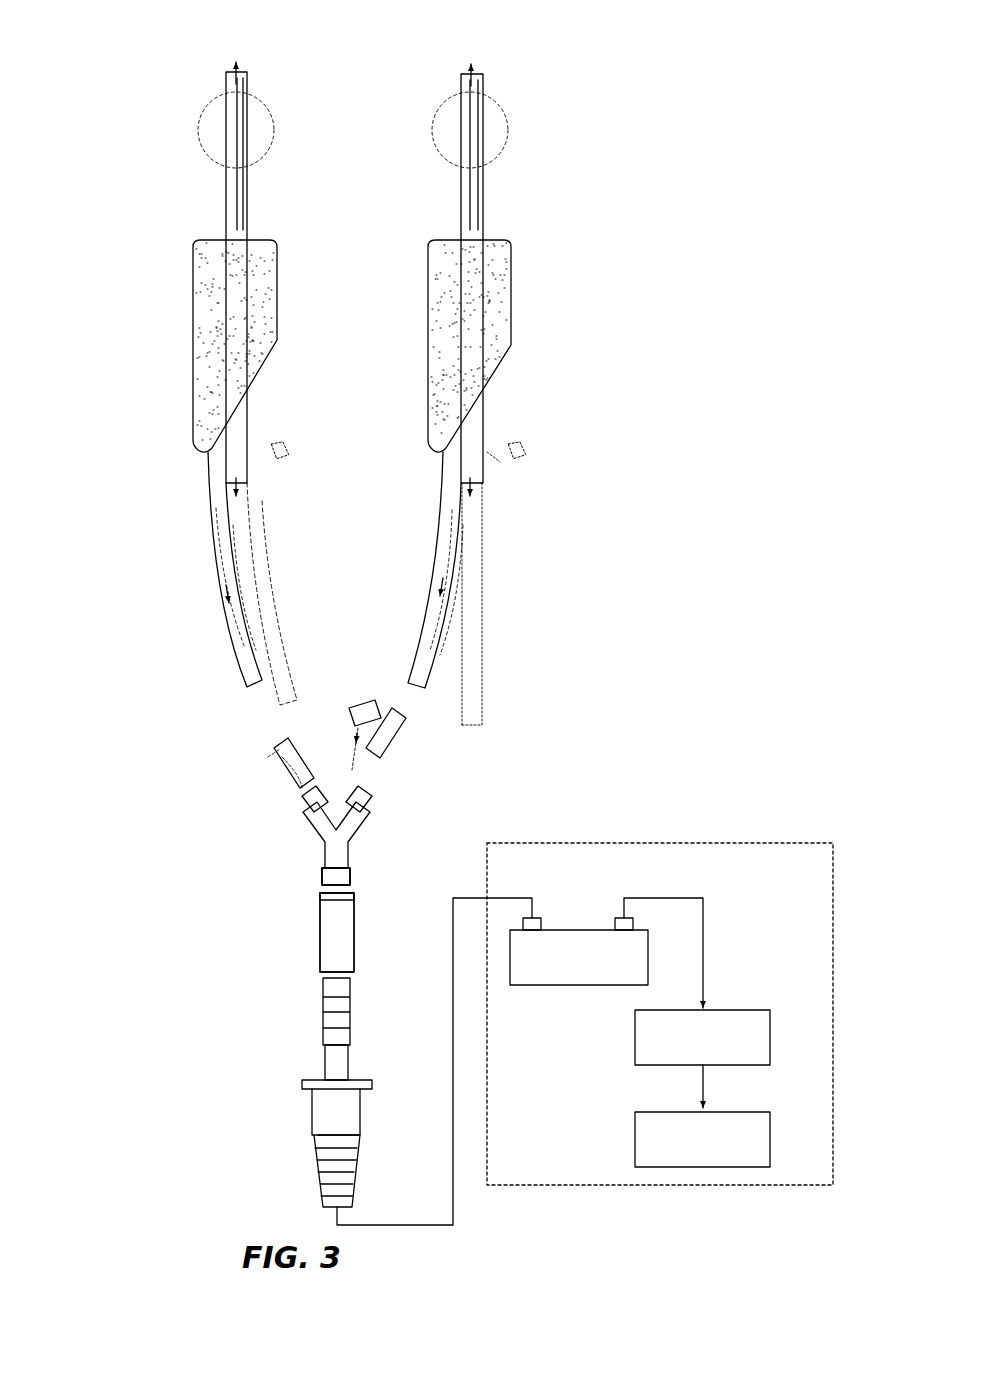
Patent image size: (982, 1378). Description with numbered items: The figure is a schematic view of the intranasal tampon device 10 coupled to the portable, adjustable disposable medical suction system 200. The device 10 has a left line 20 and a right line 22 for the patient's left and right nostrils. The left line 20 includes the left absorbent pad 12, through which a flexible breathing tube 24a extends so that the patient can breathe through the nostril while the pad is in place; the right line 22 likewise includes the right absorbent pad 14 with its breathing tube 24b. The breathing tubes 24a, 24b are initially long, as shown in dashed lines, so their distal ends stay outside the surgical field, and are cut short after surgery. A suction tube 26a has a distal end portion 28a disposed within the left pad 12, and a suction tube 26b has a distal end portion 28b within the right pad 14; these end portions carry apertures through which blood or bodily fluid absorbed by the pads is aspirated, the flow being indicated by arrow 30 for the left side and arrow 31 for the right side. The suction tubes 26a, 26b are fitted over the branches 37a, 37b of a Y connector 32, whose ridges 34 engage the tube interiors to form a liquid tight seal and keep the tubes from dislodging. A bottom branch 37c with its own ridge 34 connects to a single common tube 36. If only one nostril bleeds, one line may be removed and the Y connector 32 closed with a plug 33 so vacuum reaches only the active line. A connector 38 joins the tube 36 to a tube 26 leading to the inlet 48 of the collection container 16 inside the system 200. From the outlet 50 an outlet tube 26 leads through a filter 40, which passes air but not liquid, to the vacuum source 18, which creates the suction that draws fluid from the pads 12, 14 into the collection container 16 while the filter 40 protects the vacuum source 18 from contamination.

The intranasal tampon device 10 is at (130, 1229).
The left absorbent pad 12 is at (182, 452).
The right absorbent pad 14 is at (538, 452).
The collection container 16 is at (564, 985).
The vacuum source 18 is at (771, 1135).
The left line 20 is at (280, 58).
The right line 22 is at (516, 60).
The breathing tube 24a is at (228, 190).
The breathing tube 24b is at (462, 192).
The tube 26 is at (453, 1068).
The suction tube 26a is at (214, 596).
The suction tube 26b is at (446, 645).
The distal end portion 28a is at (220, 244).
The distal end portion 28b is at (455, 244).
The arrow 30 is at (219, 565).
The arrow 31 is at (461, 566).
The Y connector 32 is at (322, 864).
The plug 33 is at (365, 697).
The ridges 34 is at (300, 816).
The single tube 36 is at (318, 920).
The branch 37a is at (310, 842).
The branch 37b is at (362, 826).
The bottom branch 37c is at (320, 874).
The connector 38 is at (282, 1080).
The filter 40 is at (771, 1030).
The inlet 48 is at (545, 918).
The outlet 50 is at (618, 918).
The portable, adjustable disposable medical suction system 200 is at (691, 843).